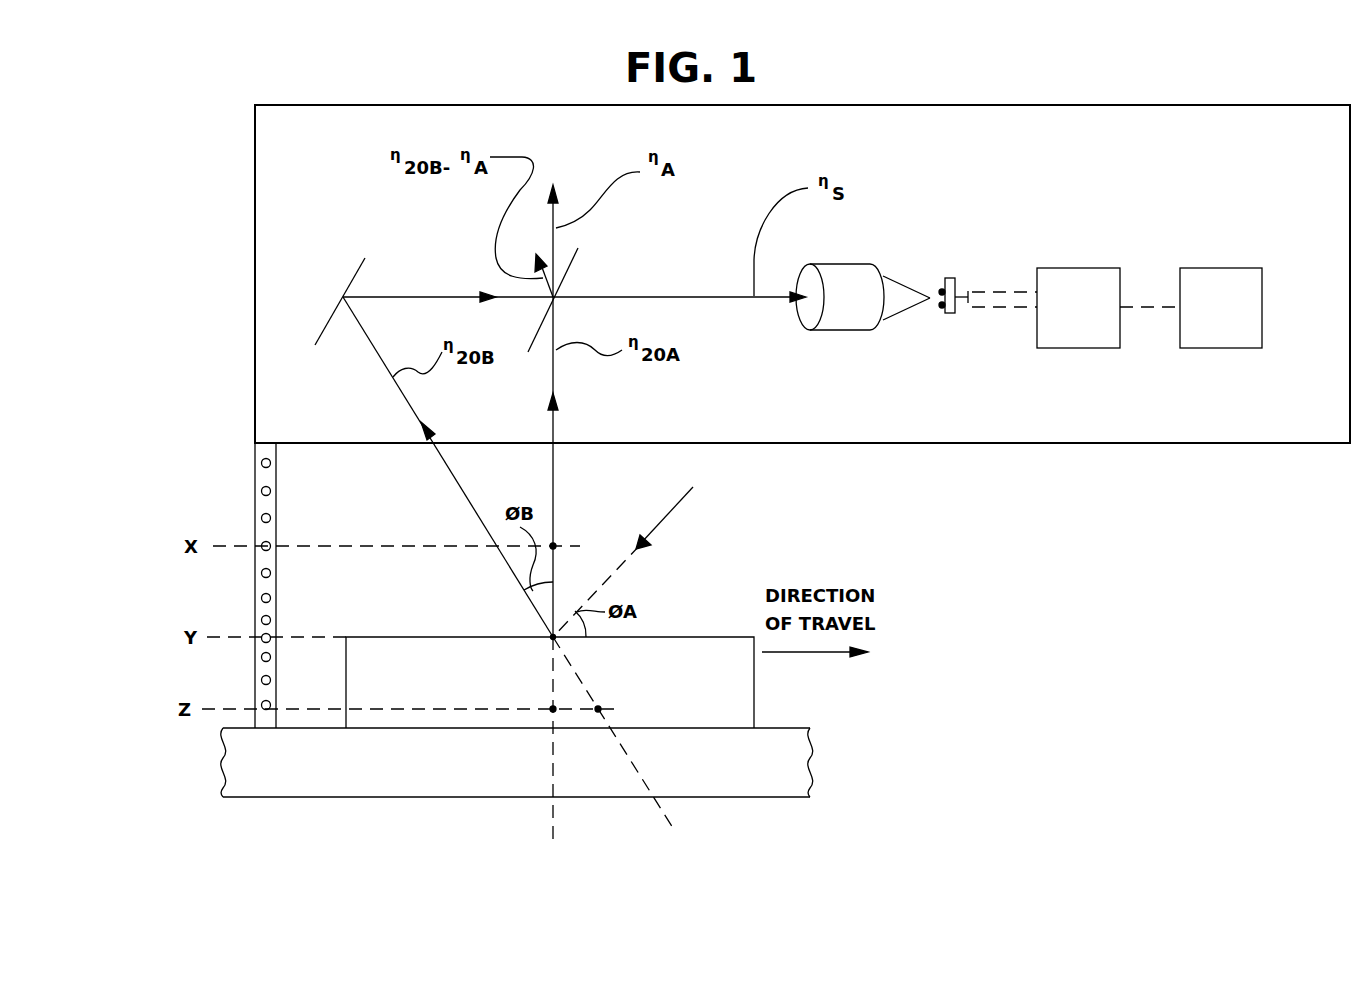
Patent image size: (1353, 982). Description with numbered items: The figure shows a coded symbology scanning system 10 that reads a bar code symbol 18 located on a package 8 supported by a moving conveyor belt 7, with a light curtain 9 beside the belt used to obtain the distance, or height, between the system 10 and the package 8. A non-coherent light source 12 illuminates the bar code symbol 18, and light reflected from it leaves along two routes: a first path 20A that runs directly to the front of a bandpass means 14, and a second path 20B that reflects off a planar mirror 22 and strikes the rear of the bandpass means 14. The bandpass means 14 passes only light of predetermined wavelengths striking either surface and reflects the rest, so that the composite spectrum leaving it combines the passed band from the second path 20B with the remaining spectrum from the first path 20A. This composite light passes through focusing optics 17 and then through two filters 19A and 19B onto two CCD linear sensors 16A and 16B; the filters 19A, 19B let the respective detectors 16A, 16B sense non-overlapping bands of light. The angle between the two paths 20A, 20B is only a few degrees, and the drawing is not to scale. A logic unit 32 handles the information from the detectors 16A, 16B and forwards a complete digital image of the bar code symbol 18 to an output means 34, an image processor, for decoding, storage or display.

The coded symbology scanning system 10 is at (288, 128).
The light curtain 9 is at (256, 507).
The package 8 is at (725, 657).
The conveyor belt 7 is at (773, 780).
The bar code symbol 18 is at (550, 637).
The non-coherent light source 12 is at (689, 640).
The first path 20A is at (583, 467).
The second path 20B is at (448, 467).
The planar mirror 22 is at (378, 286).
The bandpass means 14 is at (565, 278).
The focusing optics 17 is at (830, 264).
The CCD linear sensor 16A is at (938, 290).
The CCD linear sensor 16B is at (938, 316).
The filter 19A is at (935, 292).
The filter 19B is at (935, 305).
The logic unit 32 is at (1073, 268).
The output means 34 is at (1218, 268).